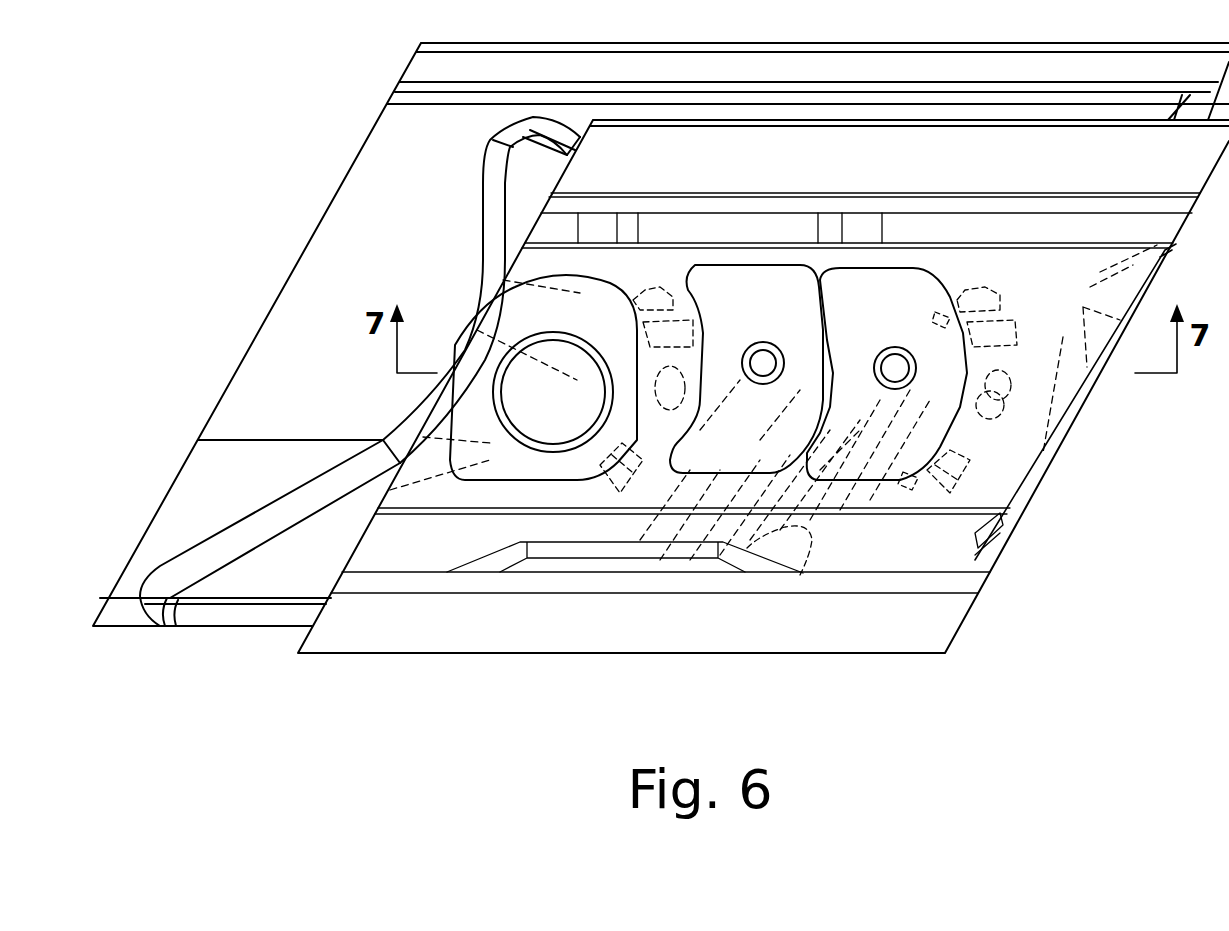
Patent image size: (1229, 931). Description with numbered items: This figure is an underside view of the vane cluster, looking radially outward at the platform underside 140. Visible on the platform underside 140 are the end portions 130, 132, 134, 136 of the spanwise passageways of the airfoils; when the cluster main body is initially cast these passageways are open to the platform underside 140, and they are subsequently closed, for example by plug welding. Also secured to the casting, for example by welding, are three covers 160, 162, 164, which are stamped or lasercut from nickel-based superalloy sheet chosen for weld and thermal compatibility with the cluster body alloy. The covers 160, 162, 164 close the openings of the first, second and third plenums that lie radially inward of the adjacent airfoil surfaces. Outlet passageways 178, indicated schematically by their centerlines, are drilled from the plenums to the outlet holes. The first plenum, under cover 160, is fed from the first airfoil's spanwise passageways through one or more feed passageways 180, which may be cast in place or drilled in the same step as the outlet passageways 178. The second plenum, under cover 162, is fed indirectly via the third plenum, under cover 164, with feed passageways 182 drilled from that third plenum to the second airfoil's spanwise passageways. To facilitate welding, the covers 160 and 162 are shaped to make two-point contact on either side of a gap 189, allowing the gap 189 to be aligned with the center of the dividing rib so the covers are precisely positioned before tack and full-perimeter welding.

The end portion of spanwise passageway 130 is at (978, 288).
The end portion of spanwise passageway 132 is at (990, 315).
The end portion of spanwise passageway 134 is at (1013, 412).
The end portion of spanwise passageway 136 is at (957, 475).
The platform underside 140 is at (1010, 272).
The cover 160 is at (890, 482).
The cover 162 is at (690, 455).
The cover 164 is at (542, 480).
The outlet passageway 178 is at (800, 575).
The feed passageway 180 is at (943, 315).
The feed passageway 182 is at (612, 292).
The gap 189 is at (832, 320).